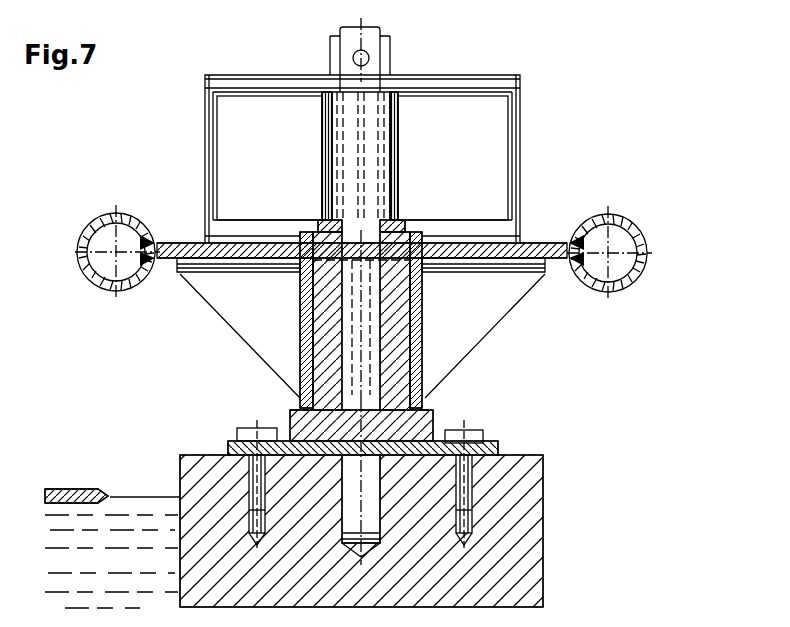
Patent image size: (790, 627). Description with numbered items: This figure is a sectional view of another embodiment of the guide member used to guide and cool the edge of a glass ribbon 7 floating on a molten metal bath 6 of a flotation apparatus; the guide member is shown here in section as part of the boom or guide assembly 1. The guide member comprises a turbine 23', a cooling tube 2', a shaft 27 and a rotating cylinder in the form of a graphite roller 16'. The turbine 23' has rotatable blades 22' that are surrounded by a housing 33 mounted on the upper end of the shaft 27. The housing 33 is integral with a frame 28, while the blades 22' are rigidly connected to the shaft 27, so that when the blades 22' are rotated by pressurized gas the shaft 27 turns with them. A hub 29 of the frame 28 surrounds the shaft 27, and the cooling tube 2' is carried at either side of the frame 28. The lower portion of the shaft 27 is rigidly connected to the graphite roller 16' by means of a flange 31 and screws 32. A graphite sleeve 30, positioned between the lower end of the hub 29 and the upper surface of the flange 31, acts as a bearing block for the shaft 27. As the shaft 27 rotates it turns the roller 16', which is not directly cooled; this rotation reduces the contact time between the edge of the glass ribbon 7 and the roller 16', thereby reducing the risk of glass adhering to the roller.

The boom 1 is at (101, 289).
The cooling tube 2' is at (363, 242).
The molten metal bath 6 is at (108, 567).
The glass ribbon 7 is at (101, 497).
The rotating cylinder 16' is at (402, 531).
The rotatable blades 22' is at (468, 158).
The turbine 23' is at (466, 155).
The shaft 27 is at (373, 516).
The frame 28 is at (250, 315).
The hub 29 is at (420, 346).
The graphite sleeve 30 is at (433, 422).
The flange 31 is at (505, 443).
The screws 32 is at (243, 426).
The housing 33 is at (526, 90).